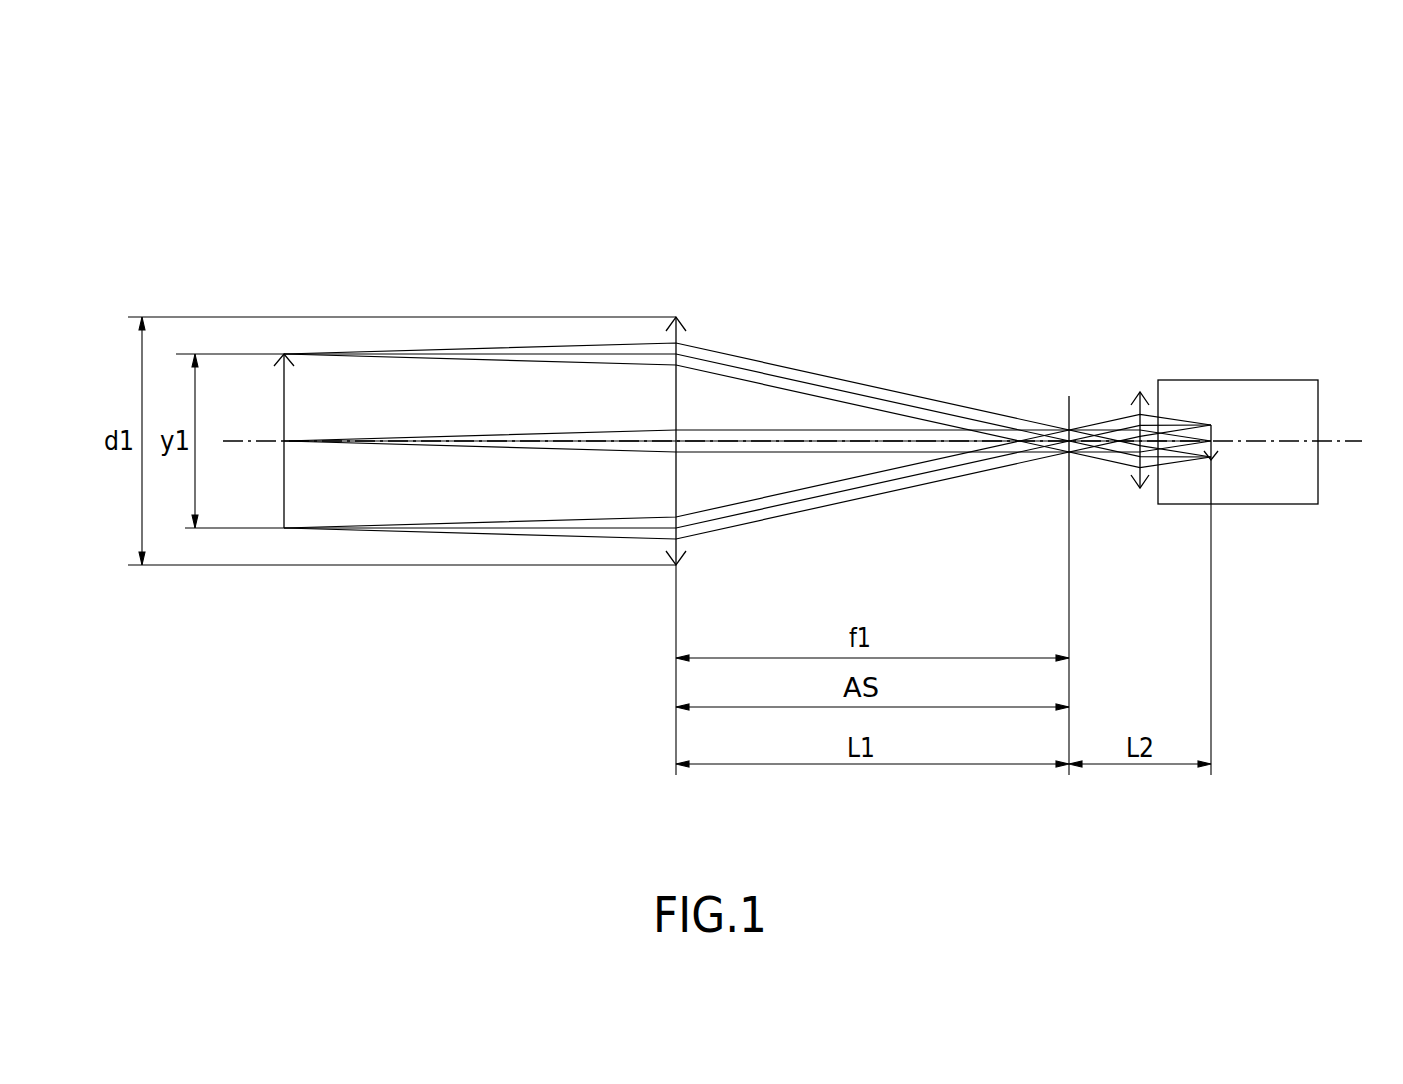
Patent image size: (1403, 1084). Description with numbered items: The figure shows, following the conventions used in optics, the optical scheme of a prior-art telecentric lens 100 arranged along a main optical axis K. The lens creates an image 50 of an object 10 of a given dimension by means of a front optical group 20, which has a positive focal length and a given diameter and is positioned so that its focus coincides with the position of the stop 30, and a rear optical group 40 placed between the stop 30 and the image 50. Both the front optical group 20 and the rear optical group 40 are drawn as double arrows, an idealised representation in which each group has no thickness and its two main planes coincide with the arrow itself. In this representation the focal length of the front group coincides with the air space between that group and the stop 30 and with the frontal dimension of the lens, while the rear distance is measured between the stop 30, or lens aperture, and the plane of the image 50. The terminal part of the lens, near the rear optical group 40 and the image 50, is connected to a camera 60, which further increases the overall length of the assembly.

The telecentric lens 100 is at (558, 167).
The object 10 is at (284, 405).
The front optical group 20 is at (676, 335).
The stop 30 is at (1069, 397).
The rear optical group 40 is at (1140, 392).
The image 50 is at (1211, 431).
The camera 60 is at (1318, 380).
The main optical axis K is at (1358, 441).